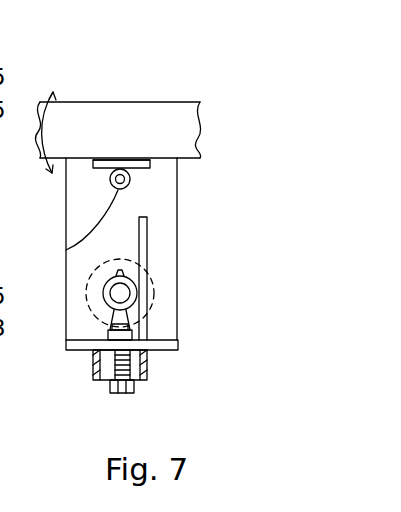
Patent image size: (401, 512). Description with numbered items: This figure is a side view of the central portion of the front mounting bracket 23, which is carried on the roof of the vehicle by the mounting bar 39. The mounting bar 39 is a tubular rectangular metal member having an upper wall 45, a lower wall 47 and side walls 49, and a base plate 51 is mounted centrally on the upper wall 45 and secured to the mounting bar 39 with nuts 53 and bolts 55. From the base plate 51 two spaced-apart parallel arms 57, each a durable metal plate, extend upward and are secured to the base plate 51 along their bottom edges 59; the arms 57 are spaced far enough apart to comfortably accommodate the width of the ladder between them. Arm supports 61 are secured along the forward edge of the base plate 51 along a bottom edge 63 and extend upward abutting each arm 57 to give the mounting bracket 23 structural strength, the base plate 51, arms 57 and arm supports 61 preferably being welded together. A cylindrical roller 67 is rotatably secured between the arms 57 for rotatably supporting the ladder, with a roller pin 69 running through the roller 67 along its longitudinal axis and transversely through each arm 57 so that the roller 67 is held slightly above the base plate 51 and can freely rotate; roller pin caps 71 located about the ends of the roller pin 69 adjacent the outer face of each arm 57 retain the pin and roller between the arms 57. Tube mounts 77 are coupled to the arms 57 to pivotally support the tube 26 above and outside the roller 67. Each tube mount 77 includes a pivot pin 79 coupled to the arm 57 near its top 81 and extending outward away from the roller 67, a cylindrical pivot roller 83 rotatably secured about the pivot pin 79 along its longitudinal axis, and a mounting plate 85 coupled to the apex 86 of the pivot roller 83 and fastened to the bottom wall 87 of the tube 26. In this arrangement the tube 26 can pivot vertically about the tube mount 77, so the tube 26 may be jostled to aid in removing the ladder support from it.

The front mounting bracket 23 is at (219, 47).
The tube 26 is at (162, 102).
The mounting bar 39 is at (95, 380).
The upper wall 45 is at (105, 368).
The lower wall 47 is at (136, 386).
The side wall 49 is at (132, 372).
The base plate 51 is at (82, 346).
The nut 53 is at (128, 336).
The bolt 55 is at (119, 395).
The arm 57 is at (150, 210).
The bottom edge 59 is at (88, 338).
The arm support 61 is at (148, 235).
The bottom edge 63 is at (150, 358).
The cylindrical roller 67 is at (88, 280).
The roller pin 69 is at (143, 293).
The roller pin cap 71 is at (128, 282).
The tube mount 77 is at (130, 180).
The pivot pin 79 is at (116, 186).
The top 81 is at (94, 164).
The pivot roller 83 is at (66, 250).
The mounting plate 85 is at (127, 162).
The apex 86 is at (118, 168).
The bottom wall 87 is at (199, 104).